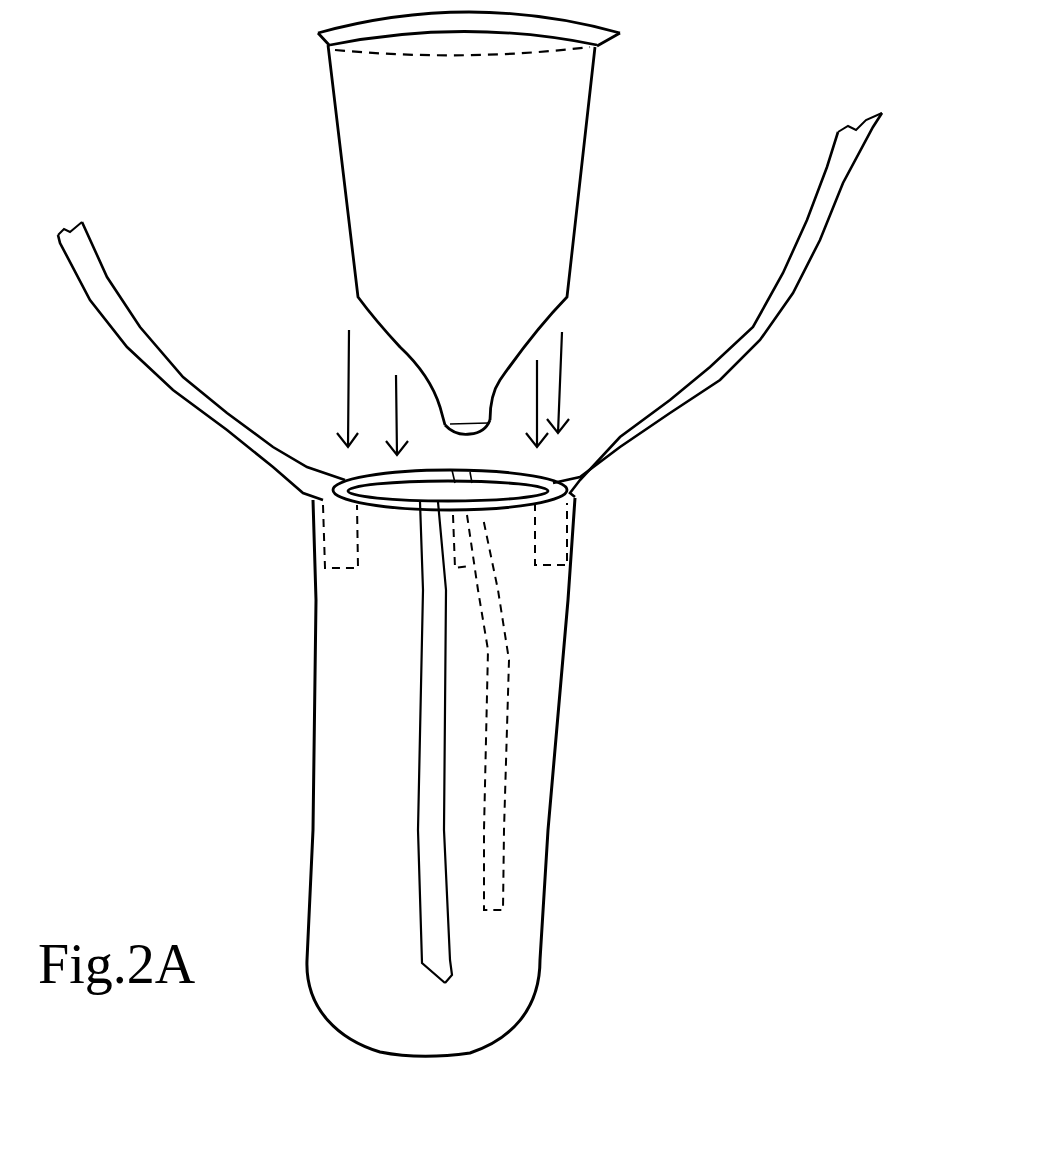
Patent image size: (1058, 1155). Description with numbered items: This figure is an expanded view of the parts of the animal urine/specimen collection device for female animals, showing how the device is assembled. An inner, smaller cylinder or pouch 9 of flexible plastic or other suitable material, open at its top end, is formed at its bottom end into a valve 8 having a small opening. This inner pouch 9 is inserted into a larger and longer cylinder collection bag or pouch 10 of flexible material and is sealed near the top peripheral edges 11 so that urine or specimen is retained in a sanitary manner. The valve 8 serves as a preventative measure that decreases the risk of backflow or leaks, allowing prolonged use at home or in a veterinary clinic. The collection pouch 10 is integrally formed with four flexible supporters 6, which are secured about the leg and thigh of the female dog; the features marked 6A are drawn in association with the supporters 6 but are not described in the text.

The flexible supporters 6 is at (813, 215).
The strip pocket 6A is at (580, 535).
The valve 8 is at (562, 438).
The inner cylinder or pouch 9 is at (540, 168).
The collection bag or pouch 10 is at (535, 789).
The top peripheral edges 11 is at (598, 44).